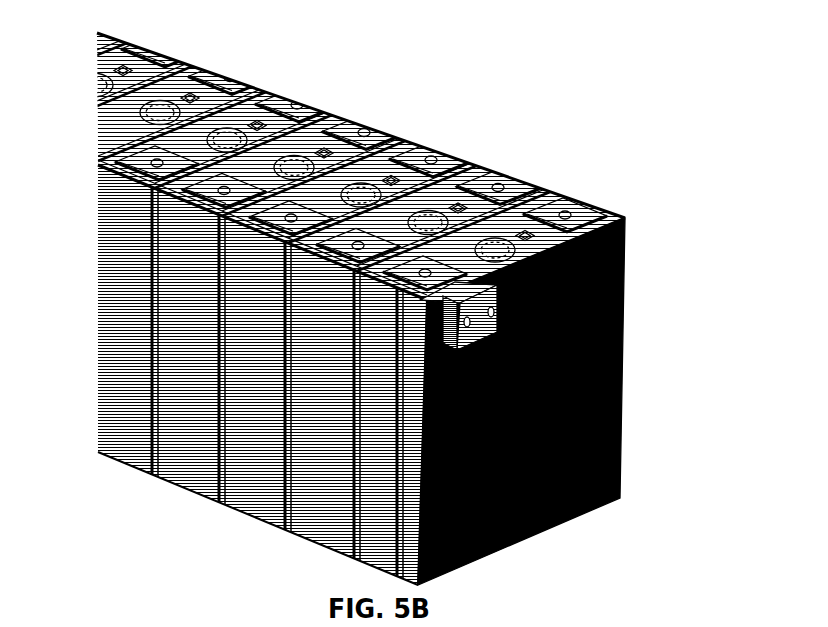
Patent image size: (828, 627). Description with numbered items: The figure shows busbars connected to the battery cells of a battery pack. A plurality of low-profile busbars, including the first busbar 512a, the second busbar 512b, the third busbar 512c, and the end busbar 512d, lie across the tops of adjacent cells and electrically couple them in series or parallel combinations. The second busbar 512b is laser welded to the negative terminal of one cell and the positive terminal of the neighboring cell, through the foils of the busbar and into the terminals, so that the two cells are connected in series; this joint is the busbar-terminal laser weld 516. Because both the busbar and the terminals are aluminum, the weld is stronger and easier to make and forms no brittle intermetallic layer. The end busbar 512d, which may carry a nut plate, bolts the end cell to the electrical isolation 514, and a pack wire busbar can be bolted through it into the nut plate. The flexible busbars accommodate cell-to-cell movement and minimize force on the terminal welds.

The busbar 1 512a is at (536, 190).
The busbar 2 512b is at (332, 230).
The busbar 3 512c is at (409, 142).
The end busbar 512d is at (423, 298).
The electrical isolation 514 is at (612, 214).
The busbar-terminal laser weld 516 is at (172, 186).